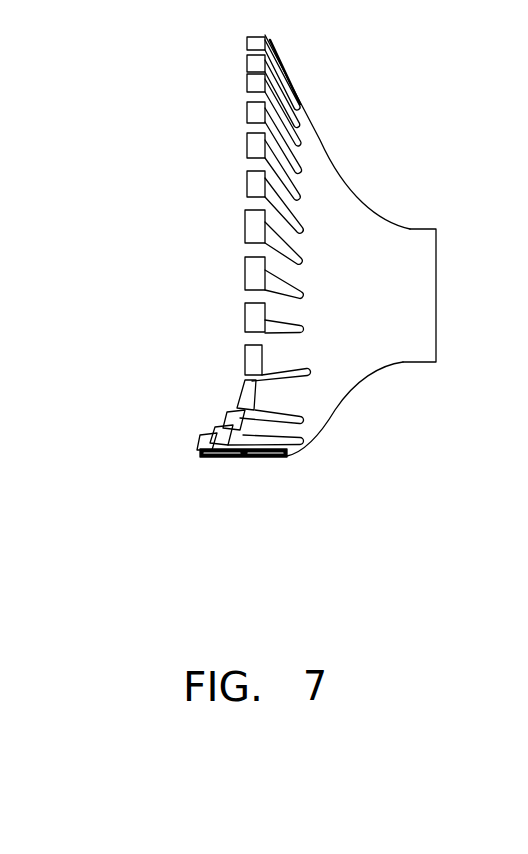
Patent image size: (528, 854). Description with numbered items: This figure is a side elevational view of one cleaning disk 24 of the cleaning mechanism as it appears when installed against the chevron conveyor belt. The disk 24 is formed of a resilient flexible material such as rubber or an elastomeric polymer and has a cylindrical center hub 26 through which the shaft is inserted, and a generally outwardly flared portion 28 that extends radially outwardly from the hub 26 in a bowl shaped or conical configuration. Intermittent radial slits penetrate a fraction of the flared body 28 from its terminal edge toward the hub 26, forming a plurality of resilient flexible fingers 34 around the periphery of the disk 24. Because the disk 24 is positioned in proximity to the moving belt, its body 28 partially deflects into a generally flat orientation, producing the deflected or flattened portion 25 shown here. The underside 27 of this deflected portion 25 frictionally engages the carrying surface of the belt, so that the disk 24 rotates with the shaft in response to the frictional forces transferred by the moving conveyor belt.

The resilient conical disk 24 is at (316, 141).
The hub 26 is at (412, 227).
The resilient flexible fingers 34 is at (277, 227).
The deflected portion 25 is at (210, 428).
The underside 27 is at (240, 453).
The outwardly flared portion 28 is at (315, 353).